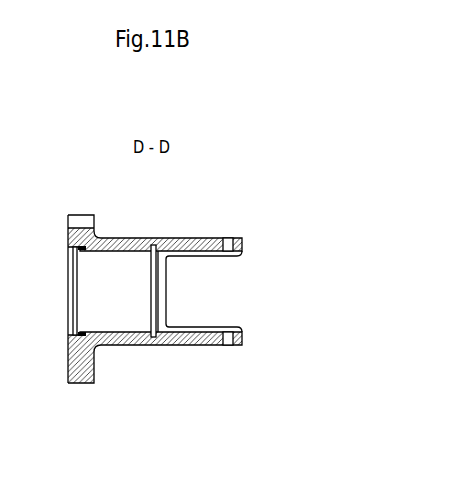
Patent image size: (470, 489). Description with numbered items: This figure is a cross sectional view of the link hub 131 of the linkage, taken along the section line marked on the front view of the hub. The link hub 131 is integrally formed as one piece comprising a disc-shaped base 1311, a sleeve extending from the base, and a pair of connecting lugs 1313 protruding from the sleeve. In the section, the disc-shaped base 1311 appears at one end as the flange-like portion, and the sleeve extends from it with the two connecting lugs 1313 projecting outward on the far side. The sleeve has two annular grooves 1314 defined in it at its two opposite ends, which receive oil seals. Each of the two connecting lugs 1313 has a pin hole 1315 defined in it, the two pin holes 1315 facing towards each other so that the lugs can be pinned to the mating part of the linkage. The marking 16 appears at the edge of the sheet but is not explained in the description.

The link hub 131 is at (154, 296).
The disc-shaped base 1311 is at (56, 333).
The connecting lugs 1313 is at (200, 347).
The annular grooves 1314 is at (157, 310).
The pin holes 1315 is at (228, 246).
The sealing ring 16 is at (43, 264).